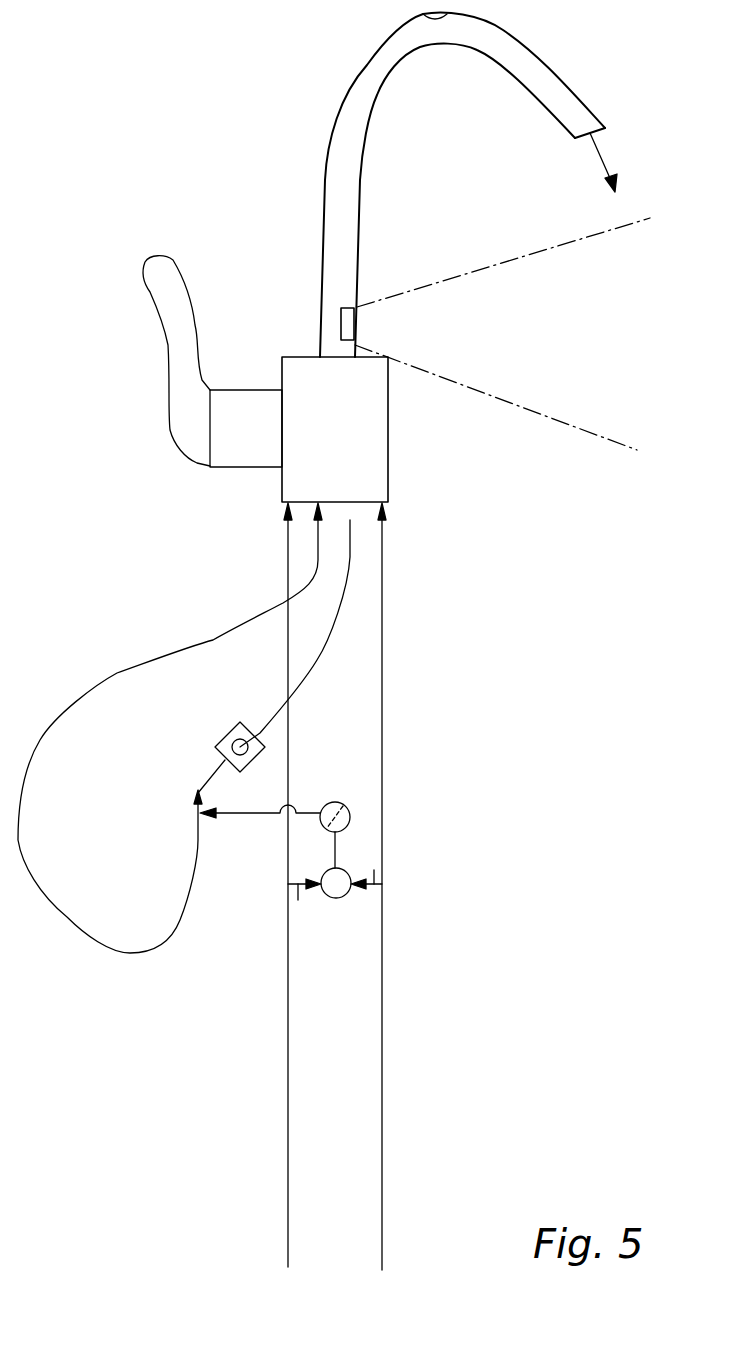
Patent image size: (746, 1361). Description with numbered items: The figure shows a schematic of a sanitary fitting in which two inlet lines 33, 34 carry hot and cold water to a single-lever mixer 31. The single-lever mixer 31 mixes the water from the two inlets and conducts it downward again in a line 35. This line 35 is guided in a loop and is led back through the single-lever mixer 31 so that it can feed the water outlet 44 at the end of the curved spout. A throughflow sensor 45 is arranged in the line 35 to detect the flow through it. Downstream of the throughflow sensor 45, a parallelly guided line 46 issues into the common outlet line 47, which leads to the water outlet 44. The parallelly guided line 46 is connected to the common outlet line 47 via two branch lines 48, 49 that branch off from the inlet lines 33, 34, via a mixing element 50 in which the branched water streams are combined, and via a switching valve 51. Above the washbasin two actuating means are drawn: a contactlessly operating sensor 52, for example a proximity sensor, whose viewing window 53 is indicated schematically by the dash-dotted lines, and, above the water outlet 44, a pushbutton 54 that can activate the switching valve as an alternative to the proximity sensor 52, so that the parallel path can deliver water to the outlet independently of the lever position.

The single-lever mixer 31 is at (368, 427).
The inlet line 33 is at (286, 1150).
The inlet line 34 is at (382, 1195).
The line 35 is at (313, 663).
The water outlet 44 is at (576, 130).
The throughflow sensor 45 is at (222, 738).
The parallelly guided line 46 is at (255, 814).
The common outlet line 47 is at (140, 953).
The branch line 48 is at (298, 900).
The branch line 49 is at (374, 870).
The mixing element 50 is at (336, 898).
The switching valve 51 is at (335, 802).
The contactlessly operating sensor 52 is at (358, 322).
The viewing window 53 is at (522, 257).
The pushbutton 54 is at (434, 16).